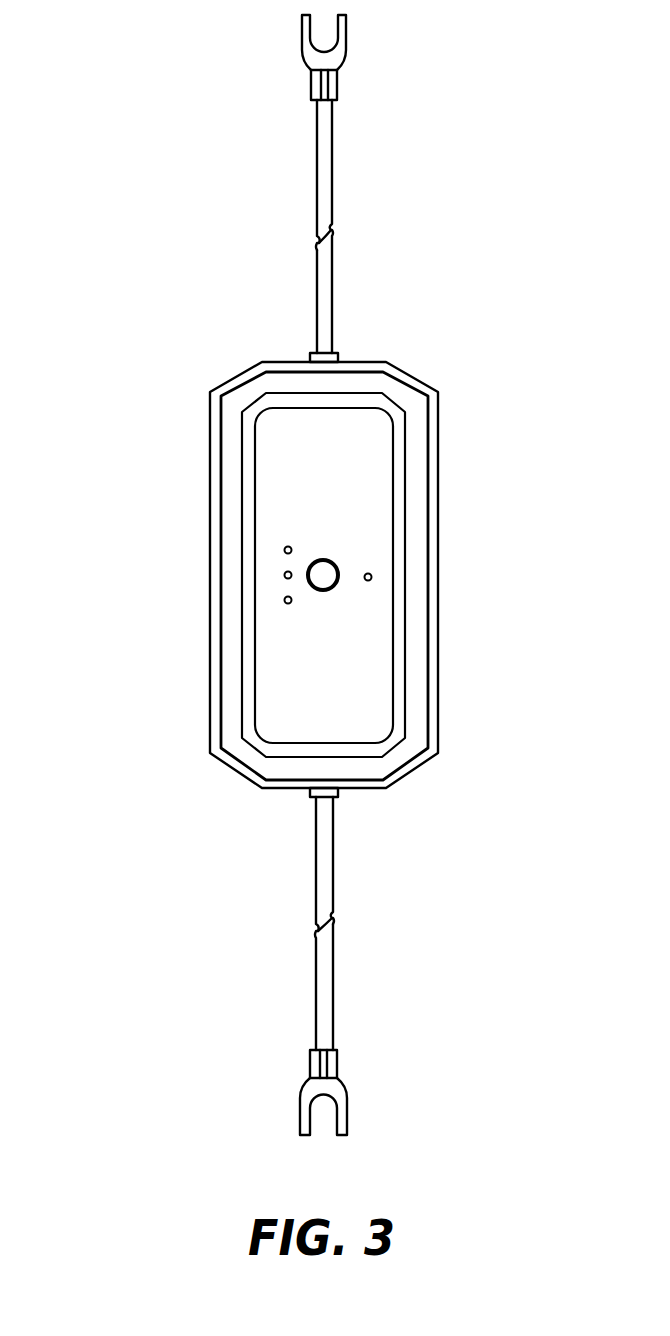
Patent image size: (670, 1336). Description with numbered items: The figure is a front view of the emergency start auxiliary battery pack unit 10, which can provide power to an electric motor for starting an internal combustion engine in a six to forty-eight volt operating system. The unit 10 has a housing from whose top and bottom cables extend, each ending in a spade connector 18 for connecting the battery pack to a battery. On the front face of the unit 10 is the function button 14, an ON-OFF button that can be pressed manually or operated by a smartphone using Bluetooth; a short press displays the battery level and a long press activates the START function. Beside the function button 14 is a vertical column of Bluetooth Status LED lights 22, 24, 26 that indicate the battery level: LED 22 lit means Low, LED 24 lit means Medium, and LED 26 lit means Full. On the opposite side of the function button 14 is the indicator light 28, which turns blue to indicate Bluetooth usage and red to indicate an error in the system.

The emergency start auxiliary battery pack unit 10 is at (443, 631).
The function button 14 is at (335, 563).
The spade connectors 18 is at (345, 1110).
The battery level LED 22 is at (284, 602).
The battery level LED 24 is at (284, 575).
The battery level LED 26 is at (284, 549).
The indicator light 28 is at (372, 576).